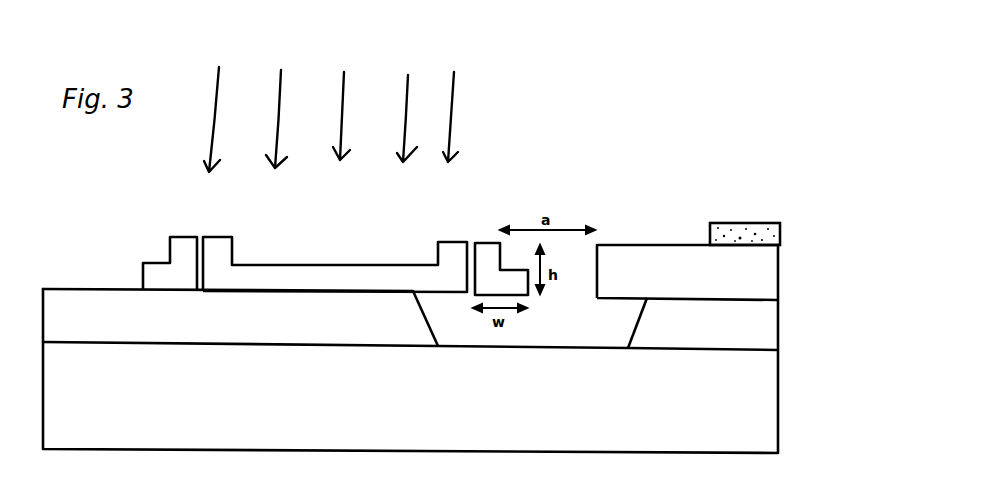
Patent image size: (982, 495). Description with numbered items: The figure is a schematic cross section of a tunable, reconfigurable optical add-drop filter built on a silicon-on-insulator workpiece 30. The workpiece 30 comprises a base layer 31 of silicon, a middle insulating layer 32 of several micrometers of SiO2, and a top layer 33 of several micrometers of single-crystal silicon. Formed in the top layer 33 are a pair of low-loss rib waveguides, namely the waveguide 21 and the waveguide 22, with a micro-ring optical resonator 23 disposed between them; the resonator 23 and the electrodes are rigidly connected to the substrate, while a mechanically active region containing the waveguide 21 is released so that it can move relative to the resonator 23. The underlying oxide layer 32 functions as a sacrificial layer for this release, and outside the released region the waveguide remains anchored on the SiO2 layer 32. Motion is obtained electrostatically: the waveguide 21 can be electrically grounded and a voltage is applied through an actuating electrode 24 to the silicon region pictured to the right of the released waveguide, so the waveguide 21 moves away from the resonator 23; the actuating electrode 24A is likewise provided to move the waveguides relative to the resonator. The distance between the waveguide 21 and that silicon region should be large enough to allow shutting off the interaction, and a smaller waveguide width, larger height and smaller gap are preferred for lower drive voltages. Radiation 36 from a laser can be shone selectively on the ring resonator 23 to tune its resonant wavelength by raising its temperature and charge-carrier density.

The optical waveguide 21 is at (492, 258).
The optical waveguide 22 is at (180, 252).
The optical resonator 23 is at (325, 278).
The actuating electrode 24 is at (737, 235).
The actuating electrode 24A is at (641, 245).
The silicon-on-insulator workpiece 30 is at (18, 280).
The base layer 31 is at (777, 392).
The middle insulating layer 32 is at (778, 320).
The top layer 33 is at (778, 267).
The radiation 36 is at (331, 102).